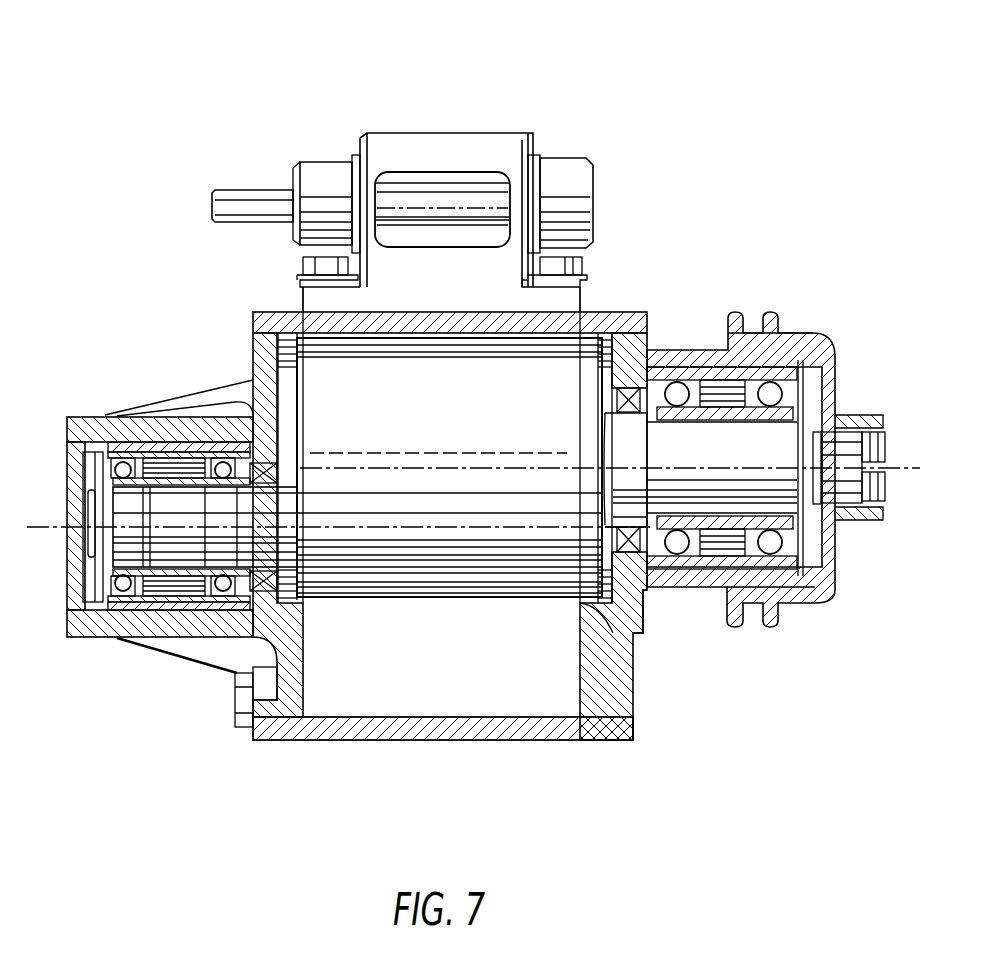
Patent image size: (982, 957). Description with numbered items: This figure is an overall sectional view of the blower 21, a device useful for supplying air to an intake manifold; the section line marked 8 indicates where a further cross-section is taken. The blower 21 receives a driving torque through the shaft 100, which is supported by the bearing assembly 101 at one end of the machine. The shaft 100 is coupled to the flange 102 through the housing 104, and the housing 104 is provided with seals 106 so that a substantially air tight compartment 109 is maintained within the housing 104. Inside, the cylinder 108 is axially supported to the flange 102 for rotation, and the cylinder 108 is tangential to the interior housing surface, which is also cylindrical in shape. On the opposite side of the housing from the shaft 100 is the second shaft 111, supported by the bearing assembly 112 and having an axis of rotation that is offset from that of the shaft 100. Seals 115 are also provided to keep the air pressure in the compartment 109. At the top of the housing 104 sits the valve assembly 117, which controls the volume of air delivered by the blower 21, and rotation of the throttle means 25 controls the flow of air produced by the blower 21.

The section line 8- 8 is at (443, 122).
The blower 21 is at (598, 163).
The throttle means 25 is at (223, 201).
The shaft 100 is at (833, 526).
The bearing assembly 101 is at (785, 606).
The flange 102 is at (637, 640).
The housing 104 is at (624, 717).
The seals 106 is at (647, 589).
The cylinder 108 is at (527, 603).
The compartment 109 is at (439, 701).
The second shaft 111 is at (100, 563).
The bearing assembly 112 is at (123, 612).
The seals 115 is at (302, 600).
The valve assembly 117 is at (383, 133).